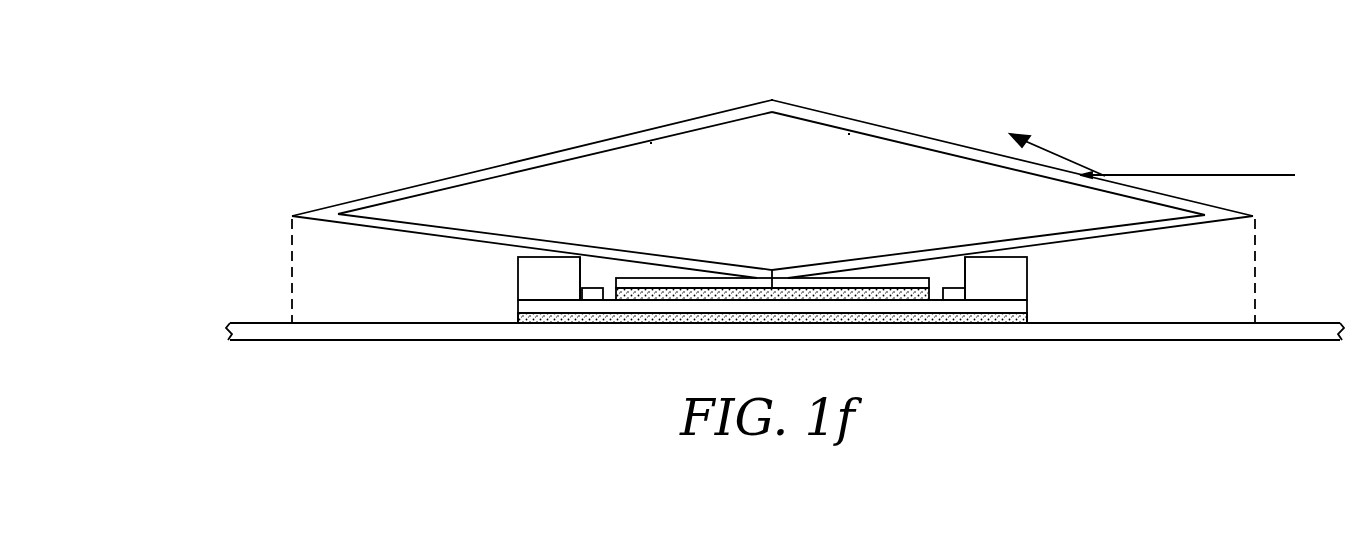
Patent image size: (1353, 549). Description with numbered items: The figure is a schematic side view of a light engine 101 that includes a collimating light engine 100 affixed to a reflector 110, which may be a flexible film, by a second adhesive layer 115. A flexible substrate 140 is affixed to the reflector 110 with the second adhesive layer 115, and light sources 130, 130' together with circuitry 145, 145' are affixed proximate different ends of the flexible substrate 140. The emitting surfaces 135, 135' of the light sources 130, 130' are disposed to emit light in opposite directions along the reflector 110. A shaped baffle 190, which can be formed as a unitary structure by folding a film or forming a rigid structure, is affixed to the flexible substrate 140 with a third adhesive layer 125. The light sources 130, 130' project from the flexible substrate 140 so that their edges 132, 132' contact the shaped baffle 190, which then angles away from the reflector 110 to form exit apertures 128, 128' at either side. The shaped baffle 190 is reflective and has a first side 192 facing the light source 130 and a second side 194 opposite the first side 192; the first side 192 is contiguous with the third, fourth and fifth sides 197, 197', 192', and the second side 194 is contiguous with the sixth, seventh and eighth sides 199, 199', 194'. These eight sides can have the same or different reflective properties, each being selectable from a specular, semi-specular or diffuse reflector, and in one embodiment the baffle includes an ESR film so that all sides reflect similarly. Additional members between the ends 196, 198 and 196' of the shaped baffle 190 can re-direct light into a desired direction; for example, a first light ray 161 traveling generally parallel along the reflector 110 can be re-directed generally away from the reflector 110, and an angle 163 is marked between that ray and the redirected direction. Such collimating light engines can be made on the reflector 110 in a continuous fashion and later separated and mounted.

The collimating light engine 100 is at (466, 99).
The light engine 101 is at (284, 95).
The reflector 110 is at (253, 318).
The second adhesive layer 115 is at (655, 315).
The third adhesive layer 125 is at (790, 292).
The exit aperture 128 is at (255, 271).
The exit aperture 128' is at (1293, 271).
The light source 130 is at (770, 338).
The light source 130' is at (775, 335).
The edge 132 is at (595, 248).
The edge 132' is at (957, 248).
The emitting surface 135 is at (516, 278).
The emitting surface 135' is at (1033, 278).
The flexible substrate 140 is at (715, 302).
The circuitry 145 is at (589, 337).
The circuitry 145' is at (952, 337).
The first light ray 161 is at (1190, 175).
The deflection angle 163 is at (1046, 152).
The shaped baffle 190 is at (873, 286).
The first side 192 is at (524, 247).
The fifth side 192' is at (1020, 247).
The second side 194 is at (555, 238).
The eighth side 194' is at (988, 232).
The end 196 is at (257, 213).
The end 196' is at (1292, 213).
The third side 197 is at (532, 155).
The fourth side 197' is at (1012, 154).
The end 198 is at (772, 99).
The sixth side 199 is at (667, 168).
The seventh side 199' is at (850, 160).